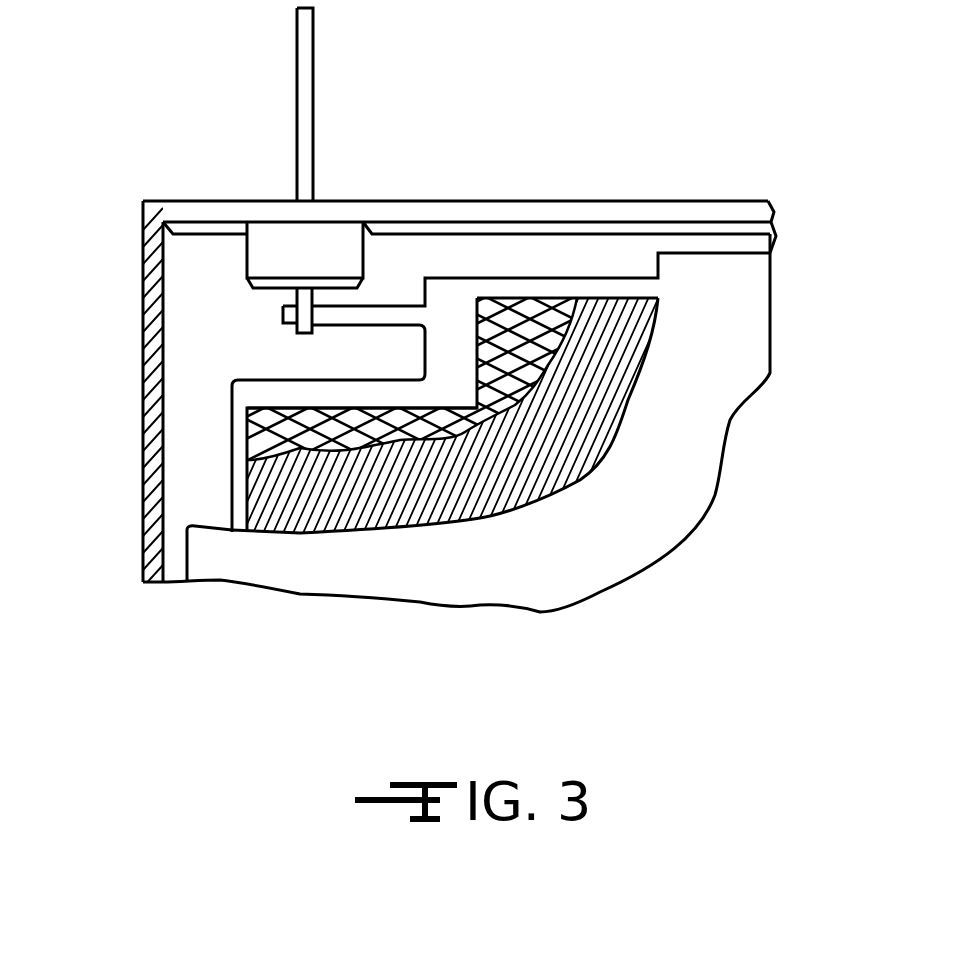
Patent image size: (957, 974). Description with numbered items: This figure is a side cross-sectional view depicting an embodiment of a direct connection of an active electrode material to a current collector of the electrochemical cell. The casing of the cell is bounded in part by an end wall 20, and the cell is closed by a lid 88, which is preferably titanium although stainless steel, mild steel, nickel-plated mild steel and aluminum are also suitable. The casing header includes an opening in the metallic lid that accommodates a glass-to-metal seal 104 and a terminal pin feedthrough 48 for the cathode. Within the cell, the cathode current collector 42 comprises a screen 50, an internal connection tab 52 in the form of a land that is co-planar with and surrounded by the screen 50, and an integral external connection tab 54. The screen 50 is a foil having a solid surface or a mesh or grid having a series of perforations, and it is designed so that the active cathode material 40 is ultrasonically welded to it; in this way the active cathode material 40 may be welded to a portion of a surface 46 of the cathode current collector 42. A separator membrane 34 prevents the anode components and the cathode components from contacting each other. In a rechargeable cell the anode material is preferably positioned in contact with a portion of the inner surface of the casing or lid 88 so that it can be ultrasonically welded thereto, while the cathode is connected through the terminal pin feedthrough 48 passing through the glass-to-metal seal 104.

The end wall 20 is at (145, 320).
The separator membrane 34 is at (725, 318).
The active cathode material 40 is at (612, 313).
The cathode current collector 42 is at (543, 357).
The surface of the cathode current collector 46 is at (282, 399).
The terminal pin feedthrough 48 is at (313, 102).
The screen 50 is at (515, 310).
The internal connection tab 52 is at (450, 300).
The external connection tab 54 is at (380, 312).
The lid 88 is at (565, 208).
The glass-to-metal seal 104 is at (280, 245).